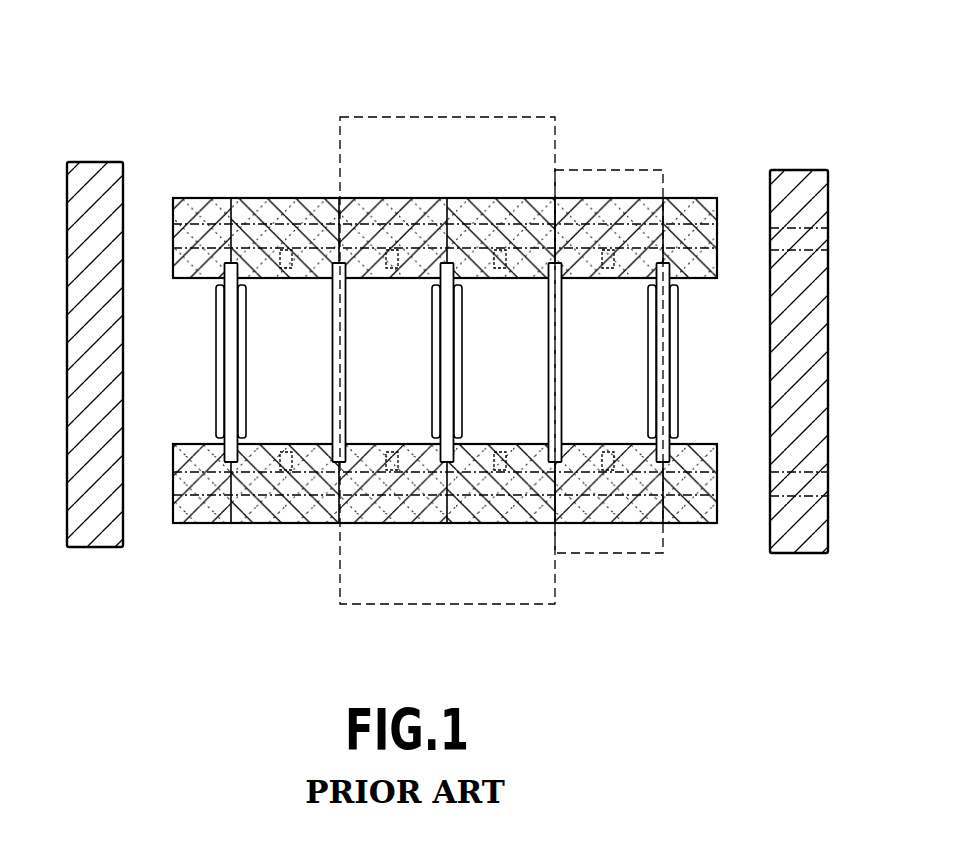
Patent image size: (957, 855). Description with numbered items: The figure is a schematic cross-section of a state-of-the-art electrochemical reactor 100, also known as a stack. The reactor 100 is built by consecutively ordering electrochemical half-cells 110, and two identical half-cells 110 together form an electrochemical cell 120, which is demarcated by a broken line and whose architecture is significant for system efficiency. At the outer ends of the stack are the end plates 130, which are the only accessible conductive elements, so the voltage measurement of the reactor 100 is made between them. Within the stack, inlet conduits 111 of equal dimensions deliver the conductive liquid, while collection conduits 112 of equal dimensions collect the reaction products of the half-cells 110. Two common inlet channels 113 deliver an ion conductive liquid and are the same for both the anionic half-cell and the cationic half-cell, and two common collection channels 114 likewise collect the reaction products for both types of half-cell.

The electrochemical reactor 100 is at (471, 364).
The electrochemical half-cell 110 is at (628, 168).
The inlet conduit 111 is at (285, 455).
The collection conduit 112 is at (390, 250).
The common inlet channel 113 is at (704, 497).
The common collection channel 114 is at (690, 230).
The electrochemical cell 120 is at (422, 117).
The end plate 130 is at (97, 160).